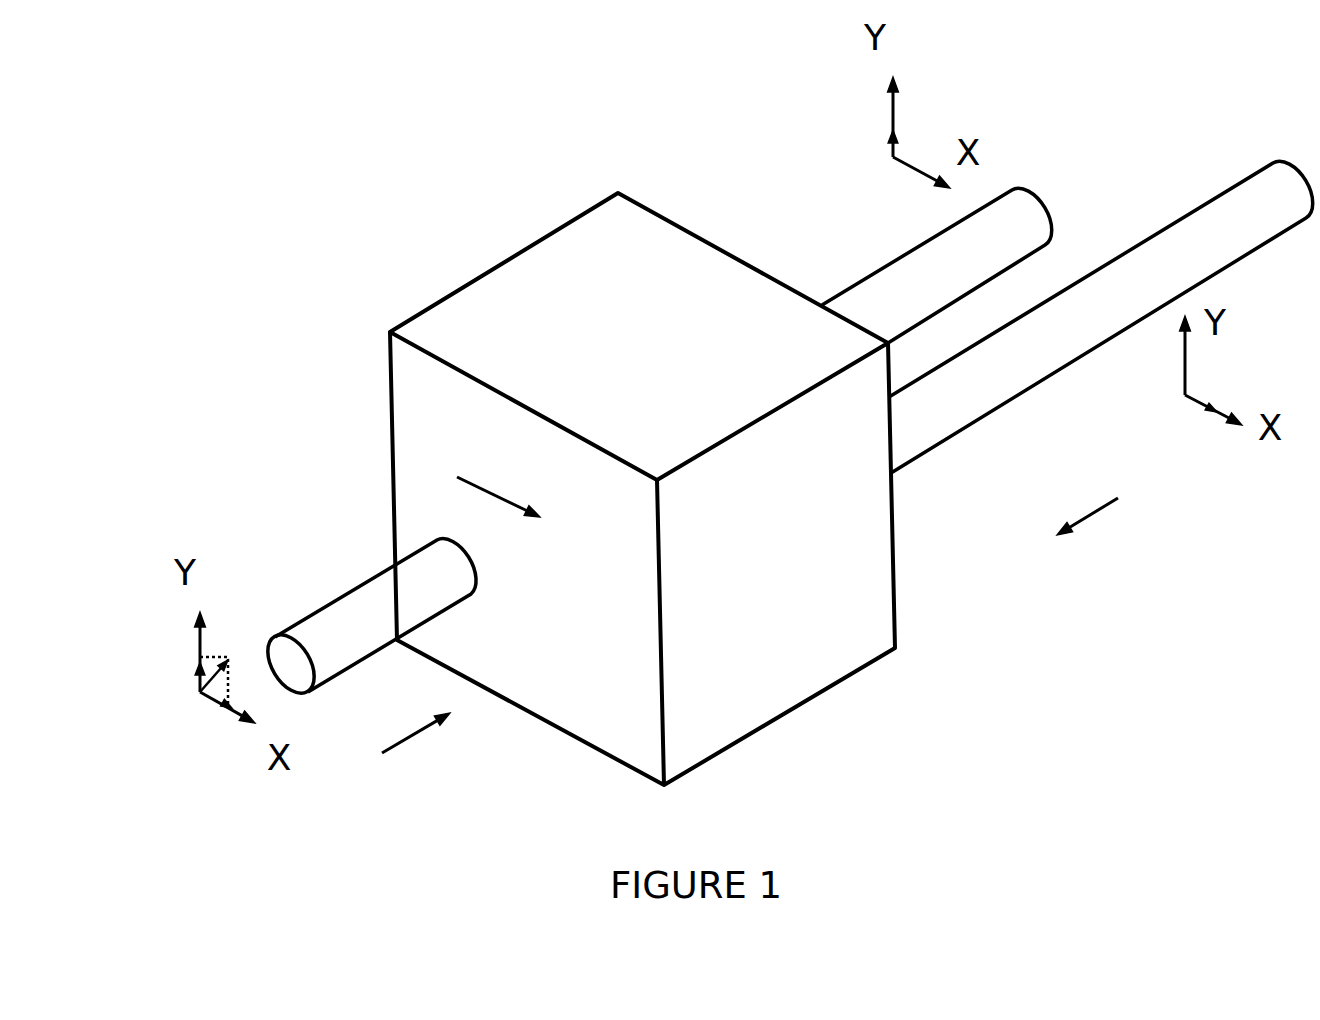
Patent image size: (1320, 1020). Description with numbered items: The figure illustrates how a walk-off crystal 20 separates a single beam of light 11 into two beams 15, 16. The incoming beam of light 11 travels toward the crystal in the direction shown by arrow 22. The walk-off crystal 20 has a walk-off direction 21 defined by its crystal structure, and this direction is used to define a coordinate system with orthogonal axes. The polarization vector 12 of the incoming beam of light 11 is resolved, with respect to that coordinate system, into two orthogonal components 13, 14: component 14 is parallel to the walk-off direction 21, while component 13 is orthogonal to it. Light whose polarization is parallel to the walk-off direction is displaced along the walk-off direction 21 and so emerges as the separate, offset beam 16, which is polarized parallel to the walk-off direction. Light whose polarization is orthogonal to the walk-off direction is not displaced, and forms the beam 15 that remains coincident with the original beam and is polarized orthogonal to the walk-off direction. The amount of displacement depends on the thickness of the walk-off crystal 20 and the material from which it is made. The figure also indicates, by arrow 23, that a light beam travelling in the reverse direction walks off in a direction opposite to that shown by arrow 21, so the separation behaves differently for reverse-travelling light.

The beam of light 11 is at (357, 593).
The polarization vector 12 is at (226, 658).
The orthogonal component 13 is at (200, 685).
The parallel component 14 is at (222, 710).
The beam 15 is at (868, 275).
The beam 16 is at (1017, 397).
The walk-off crystal 20 is at (470, 284).
The walk-off direction 21 is at (472, 484).
The direction arrow 22 is at (403, 742).
The reverse direction arrow 23 is at (1097, 515).